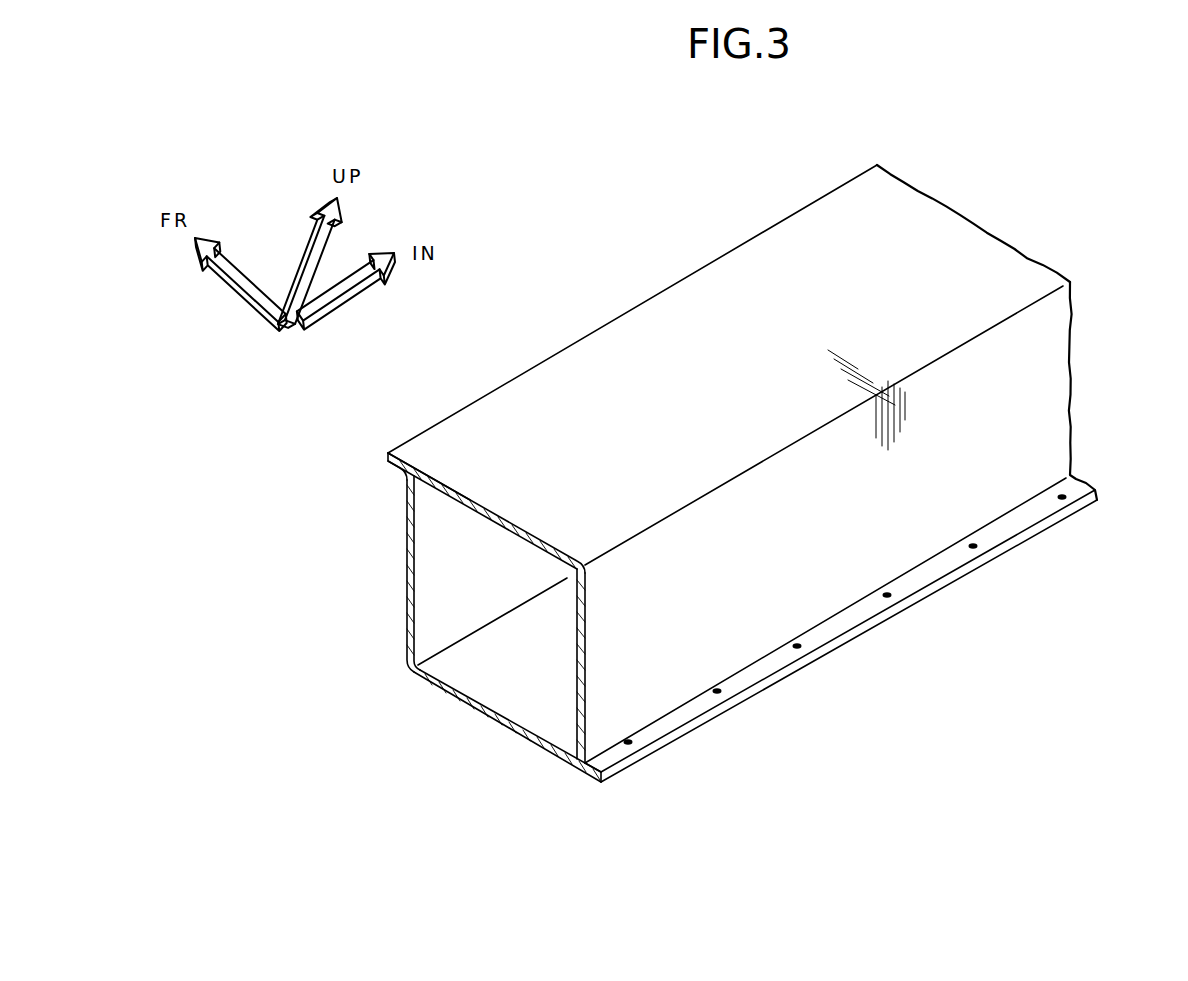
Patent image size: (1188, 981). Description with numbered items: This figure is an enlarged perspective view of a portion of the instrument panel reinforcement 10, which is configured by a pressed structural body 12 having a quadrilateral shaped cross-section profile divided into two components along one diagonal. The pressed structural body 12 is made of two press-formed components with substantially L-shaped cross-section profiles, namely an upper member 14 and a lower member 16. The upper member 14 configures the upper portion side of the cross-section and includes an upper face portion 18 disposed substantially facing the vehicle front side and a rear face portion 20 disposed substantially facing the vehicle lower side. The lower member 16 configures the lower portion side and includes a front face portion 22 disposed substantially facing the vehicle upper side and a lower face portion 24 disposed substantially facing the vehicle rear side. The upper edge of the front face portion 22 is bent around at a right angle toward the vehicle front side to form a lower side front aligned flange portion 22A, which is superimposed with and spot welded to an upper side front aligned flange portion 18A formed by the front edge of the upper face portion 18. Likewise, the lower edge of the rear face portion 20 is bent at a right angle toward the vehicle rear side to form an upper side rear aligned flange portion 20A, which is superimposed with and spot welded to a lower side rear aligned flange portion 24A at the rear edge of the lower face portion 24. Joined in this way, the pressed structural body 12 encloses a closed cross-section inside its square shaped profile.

The instrument panel reinforcement 10 is at (1004, 332).
The pressed structural body 12 is at (1089, 313).
The upper member 14 is at (672, 282).
The lower member 16 is at (463, 706).
The upper face portion 18 is at (560, 392).
The upper side front aligned flange portion 18A is at (483, 410).
The rear face portion 20 is at (857, 553).
The upper side rear aligned flange portion 20A is at (814, 638).
The front face portion 22 is at (405, 603).
The lower side front aligned flange portion 22A is at (388, 465).
The lower face portion 24 is at (515, 735).
The lower side rear aligned flange portion 24A is at (593, 780).